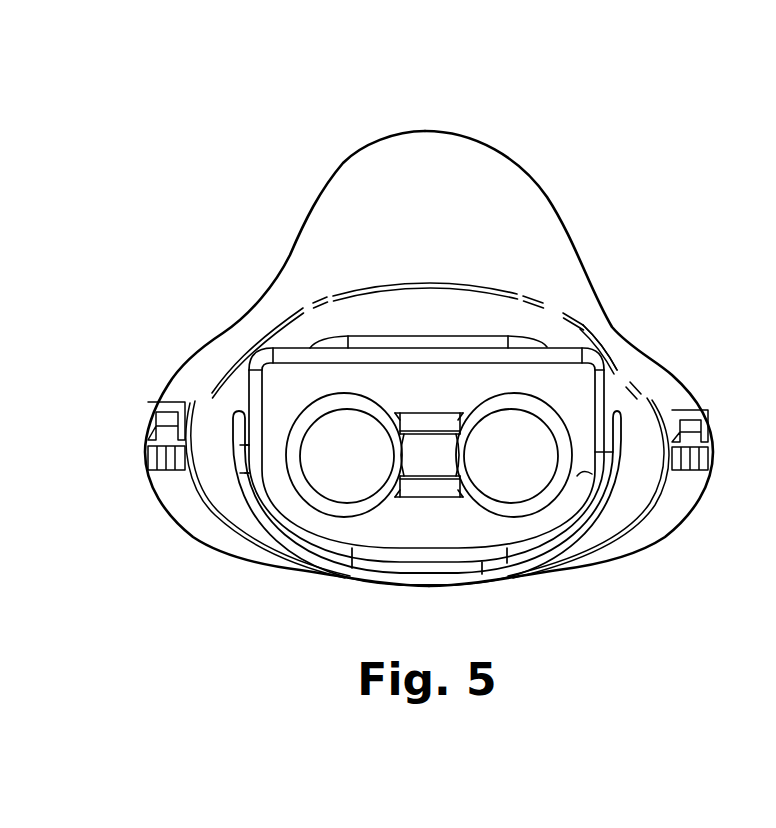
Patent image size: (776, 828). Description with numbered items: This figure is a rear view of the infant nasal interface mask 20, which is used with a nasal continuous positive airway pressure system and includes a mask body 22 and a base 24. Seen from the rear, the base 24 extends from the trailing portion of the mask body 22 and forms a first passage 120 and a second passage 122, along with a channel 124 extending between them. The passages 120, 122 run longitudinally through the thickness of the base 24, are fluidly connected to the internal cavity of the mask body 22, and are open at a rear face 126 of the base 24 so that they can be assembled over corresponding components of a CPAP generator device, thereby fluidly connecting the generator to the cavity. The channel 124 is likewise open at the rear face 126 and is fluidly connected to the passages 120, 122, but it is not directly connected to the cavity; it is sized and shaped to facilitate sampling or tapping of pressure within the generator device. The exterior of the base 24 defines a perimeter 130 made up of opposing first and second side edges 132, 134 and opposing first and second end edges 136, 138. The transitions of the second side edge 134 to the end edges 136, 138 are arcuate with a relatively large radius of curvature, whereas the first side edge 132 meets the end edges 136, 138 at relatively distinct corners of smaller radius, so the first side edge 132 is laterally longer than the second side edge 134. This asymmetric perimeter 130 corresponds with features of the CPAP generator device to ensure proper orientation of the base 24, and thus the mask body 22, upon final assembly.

The infant nasal interface mask 20 is at (240, 132).
The mask body 22 is at (553, 186).
The base 24 is at (306, 536).
The first passage 120 is at (291, 440).
The second passage 122 is at (546, 516).
The channel 124 is at (430, 458).
The rear face 126 is at (587, 475).
The perimeter 130 is at (624, 364).
The first side edge 132 is at (434, 348).
The second side edge 134 is at (483, 583).
The first end edge 136 is at (251, 475).
The second end edge 138 is at (613, 452).